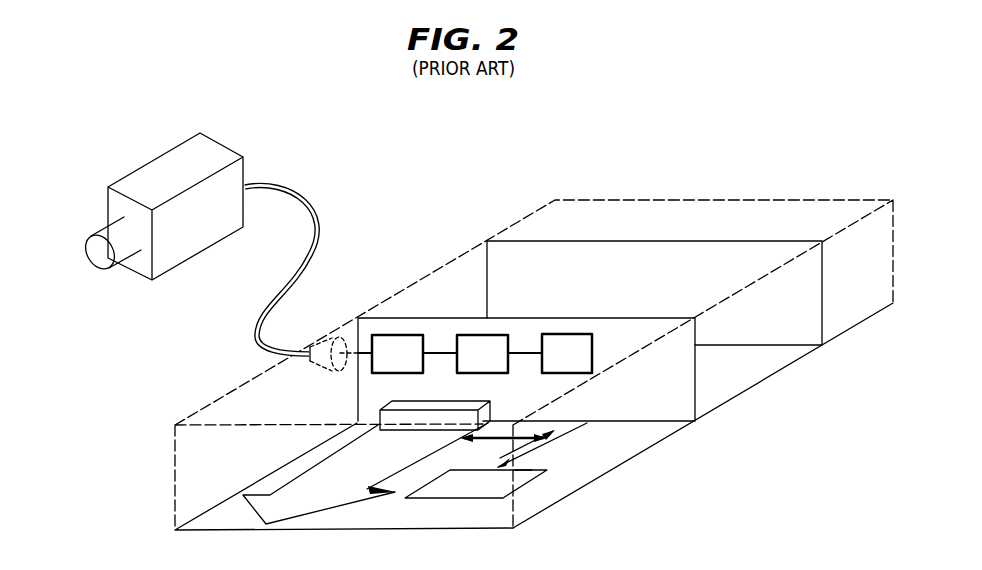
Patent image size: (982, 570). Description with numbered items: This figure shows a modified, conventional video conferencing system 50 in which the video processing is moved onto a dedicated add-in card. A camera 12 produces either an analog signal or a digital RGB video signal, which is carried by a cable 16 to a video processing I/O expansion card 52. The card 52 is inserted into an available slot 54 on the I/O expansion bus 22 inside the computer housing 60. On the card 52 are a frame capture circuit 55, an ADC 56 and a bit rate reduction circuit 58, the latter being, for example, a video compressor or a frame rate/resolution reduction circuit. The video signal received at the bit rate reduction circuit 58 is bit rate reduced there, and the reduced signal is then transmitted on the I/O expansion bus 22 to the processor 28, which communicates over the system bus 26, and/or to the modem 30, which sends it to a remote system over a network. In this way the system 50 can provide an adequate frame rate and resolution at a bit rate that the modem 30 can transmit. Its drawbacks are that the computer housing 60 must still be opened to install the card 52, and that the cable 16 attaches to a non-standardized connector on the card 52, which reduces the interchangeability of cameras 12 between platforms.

The camera 12 is at (158, 170).
The cable 16 is at (314, 221).
The I/O expansion bus 22 is at (319, 501).
The system bus 26 is at (552, 446).
The processor 28 is at (520, 485).
The modem 30 is at (778, 241).
The modified video conferencing system 50 is at (402, 137).
The video processing I/O expansion card 52 is at (695, 398).
The slot 54 is at (380, 418).
The frame capture circuit 55 is at (477, 335).
The ADC 56 is at (397, 335).
The bit rate reduction circuit 58 is at (593, 362).
The computer housing 60 is at (750, 368).